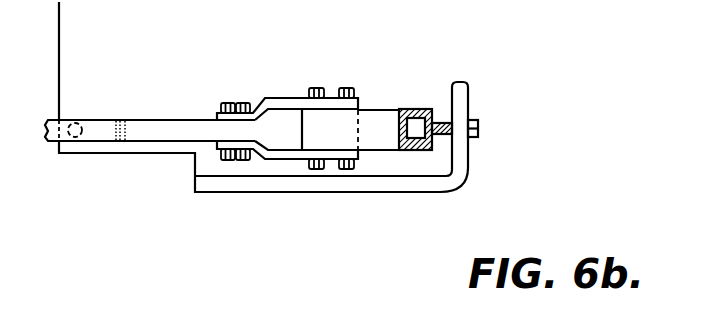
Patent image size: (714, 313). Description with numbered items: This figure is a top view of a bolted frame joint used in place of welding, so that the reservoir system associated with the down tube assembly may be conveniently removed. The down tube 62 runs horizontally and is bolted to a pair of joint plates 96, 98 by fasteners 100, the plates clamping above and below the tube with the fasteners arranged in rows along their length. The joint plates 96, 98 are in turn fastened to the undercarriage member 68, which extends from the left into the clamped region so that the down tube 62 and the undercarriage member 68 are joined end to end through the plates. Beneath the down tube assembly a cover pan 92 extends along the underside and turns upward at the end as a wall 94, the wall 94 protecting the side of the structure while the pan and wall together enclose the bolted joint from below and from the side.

The down tube 62 is at (382, 158).
The undercarriage member 68 is at (148, 125).
The cover pan 92 is at (468, 173).
The wall 94 is at (322, 183).
The joint plate 96 is at (272, 162).
The joint plate 98 is at (285, 97).
The fasteners 100 is at (343, 88).